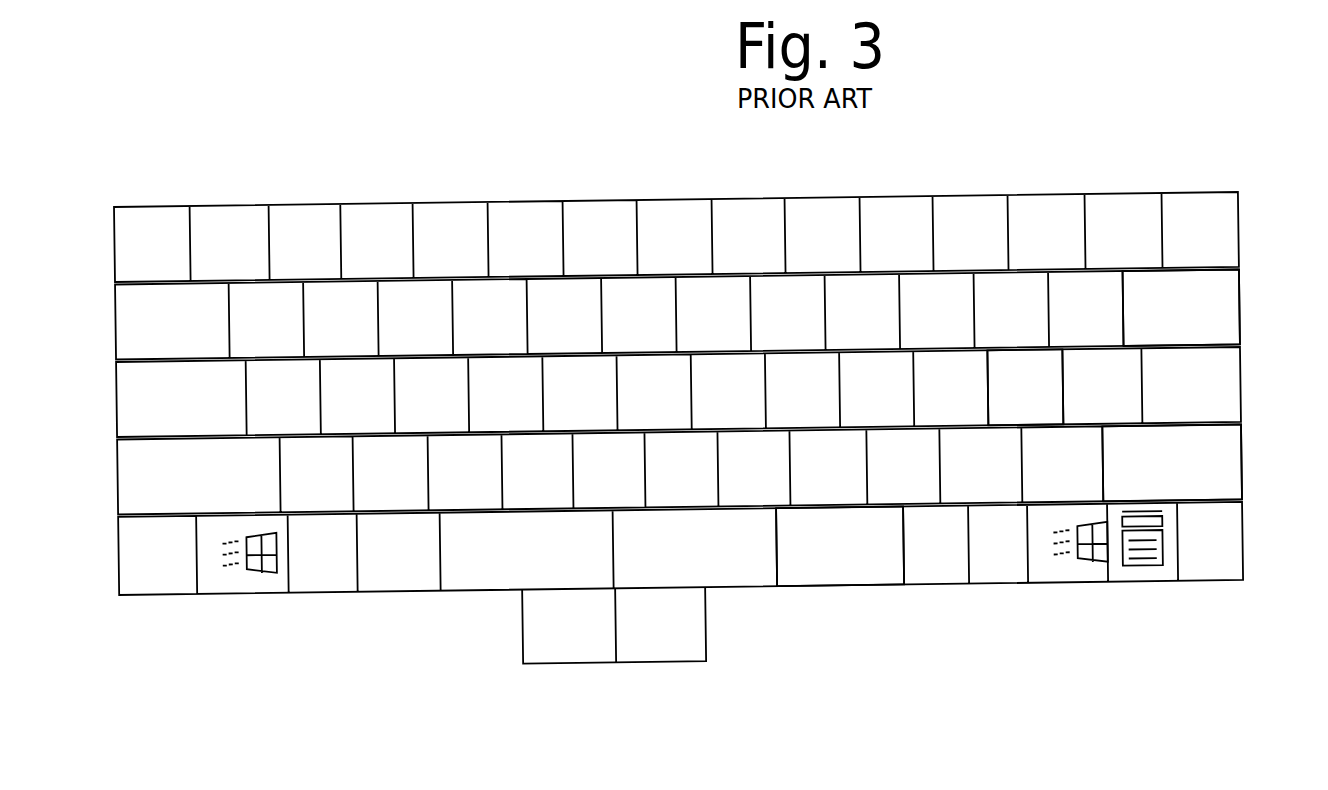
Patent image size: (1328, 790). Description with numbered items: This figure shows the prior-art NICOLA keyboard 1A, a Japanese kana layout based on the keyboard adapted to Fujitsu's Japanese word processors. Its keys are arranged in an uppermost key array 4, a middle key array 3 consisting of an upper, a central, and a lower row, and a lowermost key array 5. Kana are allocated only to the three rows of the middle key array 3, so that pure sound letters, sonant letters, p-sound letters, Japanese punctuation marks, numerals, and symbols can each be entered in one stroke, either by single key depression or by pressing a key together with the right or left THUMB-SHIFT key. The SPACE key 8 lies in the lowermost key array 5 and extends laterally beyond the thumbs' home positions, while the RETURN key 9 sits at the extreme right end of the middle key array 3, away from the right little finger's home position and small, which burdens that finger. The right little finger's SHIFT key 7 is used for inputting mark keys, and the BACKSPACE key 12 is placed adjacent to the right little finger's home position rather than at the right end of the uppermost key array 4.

The NICOLA keyboard 1A is at (622, 188).
The uppermost key array 4 is at (100, 212).
The middle key array 3 is at (100, 298).
The lowermost key array 5 is at (100, 523).
The RETURN key 9 is at (1217, 311).
The SHIFT key 7 is at (1208, 462).
The SPACE key 8 is at (888, 562).
The BACKSPACE key 12 is at (1005, 418).